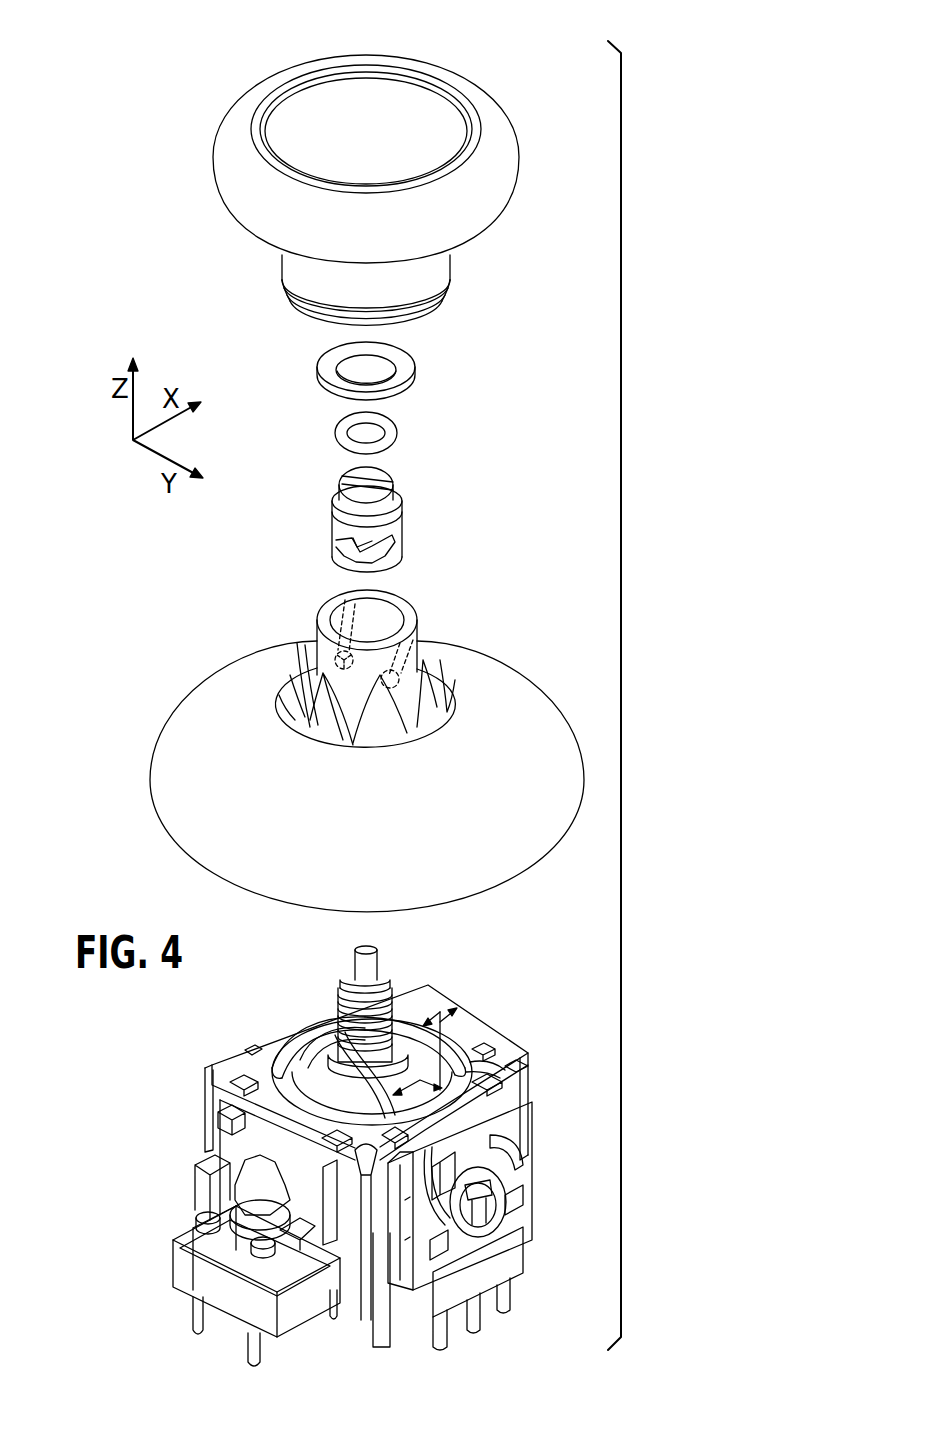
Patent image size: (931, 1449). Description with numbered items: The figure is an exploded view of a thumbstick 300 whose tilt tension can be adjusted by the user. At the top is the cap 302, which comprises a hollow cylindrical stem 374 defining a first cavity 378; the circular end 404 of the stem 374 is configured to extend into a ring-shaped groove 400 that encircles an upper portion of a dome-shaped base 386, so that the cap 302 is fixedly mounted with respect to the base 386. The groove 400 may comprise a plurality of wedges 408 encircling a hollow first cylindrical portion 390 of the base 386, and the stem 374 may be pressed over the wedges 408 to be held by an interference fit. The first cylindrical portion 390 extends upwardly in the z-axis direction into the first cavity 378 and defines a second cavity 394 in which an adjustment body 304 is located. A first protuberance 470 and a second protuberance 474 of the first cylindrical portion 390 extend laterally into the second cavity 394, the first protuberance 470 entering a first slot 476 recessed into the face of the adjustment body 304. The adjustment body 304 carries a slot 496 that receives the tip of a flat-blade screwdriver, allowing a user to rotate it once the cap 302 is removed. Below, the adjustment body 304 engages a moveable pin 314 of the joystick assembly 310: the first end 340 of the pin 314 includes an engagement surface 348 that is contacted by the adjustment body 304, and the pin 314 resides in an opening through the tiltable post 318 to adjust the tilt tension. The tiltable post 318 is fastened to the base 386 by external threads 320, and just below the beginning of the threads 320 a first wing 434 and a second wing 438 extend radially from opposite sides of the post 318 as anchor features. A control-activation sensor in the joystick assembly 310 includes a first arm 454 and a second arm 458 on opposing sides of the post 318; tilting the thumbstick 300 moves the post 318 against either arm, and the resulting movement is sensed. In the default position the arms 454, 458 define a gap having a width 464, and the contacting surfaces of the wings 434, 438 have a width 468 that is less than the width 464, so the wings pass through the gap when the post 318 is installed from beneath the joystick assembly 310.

The thumbstick 300 is at (139, 94).
The cap 302 is at (469, 66).
The first cavity 378 is at (519, 163).
The hollow cylindrical stem 374 is at (452, 260).
The circular end 404 is at (318, 321).
The adjustment body 304 is at (332, 525).
The slot 496 is at (372, 477).
The first slot 476 is at (397, 530).
The dome-shaped base 386 is at (520, 676).
The first cylindrical portion 390 is at (317, 628).
The second cavity 394 is at (383, 617).
The first protuberance 470 is at (342, 597).
The second protuberance 474 is at (415, 640).
The ring-shaped groove 400 is at (447, 703).
The wedges 408 is at (325, 740).
The joystick assembly 310 is at (184, 1086).
The pin 314 is at (380, 975).
The engagement surface 348 is at (368, 950).
The first end 340 is at (355, 961).
The external threads 320 is at (345, 1003).
The tiltable post 318 is at (348, 1058).
The first arm 454 is at (290, 1040).
The first wing 434 is at (338, 1026).
The width 464 is at (420, 1075).
The width 468 is at (432, 1005).
The second wing 438 is at (430, 1048).
The second arm 458 is at (505, 1067).